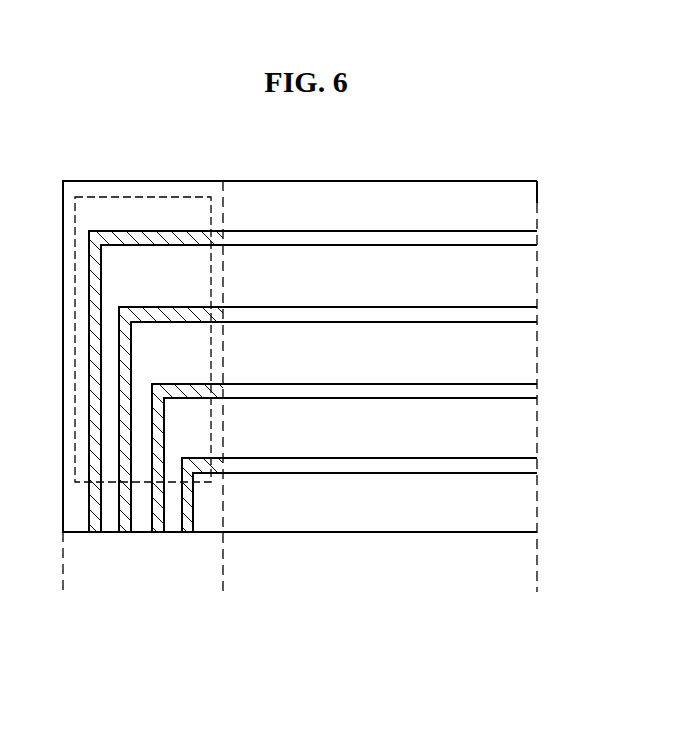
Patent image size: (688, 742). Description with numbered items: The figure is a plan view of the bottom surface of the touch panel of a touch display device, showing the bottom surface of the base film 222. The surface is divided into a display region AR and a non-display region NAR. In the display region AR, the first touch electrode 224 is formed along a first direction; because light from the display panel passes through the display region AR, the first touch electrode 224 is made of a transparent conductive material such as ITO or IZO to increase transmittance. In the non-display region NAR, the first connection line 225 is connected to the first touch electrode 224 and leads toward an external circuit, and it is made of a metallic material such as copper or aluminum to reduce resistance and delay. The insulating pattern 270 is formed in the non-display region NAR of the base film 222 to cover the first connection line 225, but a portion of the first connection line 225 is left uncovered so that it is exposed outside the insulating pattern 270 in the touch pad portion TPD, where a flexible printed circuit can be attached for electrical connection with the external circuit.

The base film 222 is at (482, 214).
The first touch electrode 224 is at (313, 381).
The first connection line 225 is at (101, 277).
The insulating pattern 270 is at (172, 197).
The non-display region NAR is at (223, 575).
The display region AR is at (223, 575).
The touch pad portion TPD is at (174, 530).